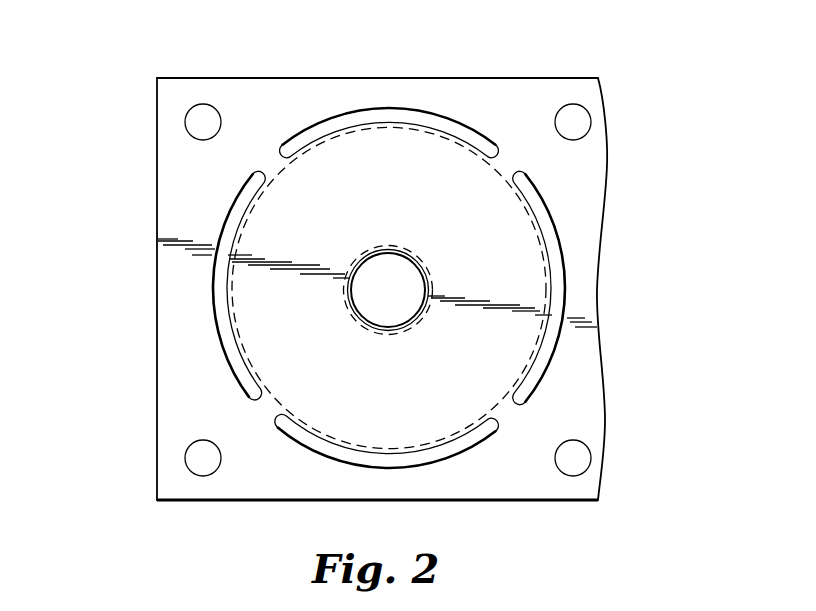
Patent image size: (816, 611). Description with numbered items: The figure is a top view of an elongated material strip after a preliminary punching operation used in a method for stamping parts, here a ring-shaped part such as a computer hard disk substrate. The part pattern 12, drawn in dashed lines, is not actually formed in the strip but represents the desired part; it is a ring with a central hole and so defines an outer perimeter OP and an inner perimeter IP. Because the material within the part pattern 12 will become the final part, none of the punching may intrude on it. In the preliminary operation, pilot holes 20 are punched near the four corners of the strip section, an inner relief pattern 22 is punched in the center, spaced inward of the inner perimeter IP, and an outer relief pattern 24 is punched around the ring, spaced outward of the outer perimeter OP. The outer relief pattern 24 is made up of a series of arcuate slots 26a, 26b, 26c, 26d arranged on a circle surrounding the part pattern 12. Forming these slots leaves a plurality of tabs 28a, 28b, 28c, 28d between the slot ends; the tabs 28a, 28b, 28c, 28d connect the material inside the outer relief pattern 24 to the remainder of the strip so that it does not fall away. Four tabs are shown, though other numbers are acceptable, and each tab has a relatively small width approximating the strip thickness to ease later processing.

The part pattern 12 is at (423, 126).
The pilot holes 20 is at (203, 116).
The inner relief pattern 22 is at (372, 257).
The outer relief pattern 24 is at (557, 219).
The slot 26a is at (364, 110).
The slot 26b is at (562, 273).
The slot 26c is at (465, 448).
The slot 26d is at (216, 308).
The tab 28a is at (512, 162).
The tab 28b is at (515, 416).
The tab 28c is at (265, 416).
The tab 28d is at (268, 162).
The outer perimeter OP is at (302, 156).
The inner perimeter IP is at (414, 250).